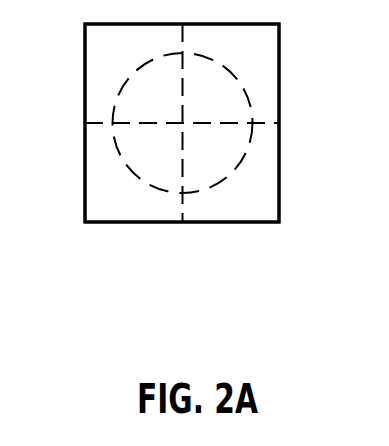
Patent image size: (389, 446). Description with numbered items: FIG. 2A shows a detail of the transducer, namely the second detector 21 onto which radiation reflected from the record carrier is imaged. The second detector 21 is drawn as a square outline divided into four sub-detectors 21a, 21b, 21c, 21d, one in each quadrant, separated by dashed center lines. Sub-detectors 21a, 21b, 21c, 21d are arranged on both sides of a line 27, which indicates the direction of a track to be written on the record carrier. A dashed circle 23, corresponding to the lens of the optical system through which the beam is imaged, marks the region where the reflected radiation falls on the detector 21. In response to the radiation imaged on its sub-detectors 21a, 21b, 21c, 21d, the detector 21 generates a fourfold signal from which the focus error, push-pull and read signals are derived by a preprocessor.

The second detector 21 is at (107, 266).
The first quadrant sub-element 21a is at (90, 66).
The second quadrant sub-element 21b is at (273, 66).
The third quadrant sub-element 21c is at (92, 192).
The fourth quadrant sub-element 21d is at (262, 191).
The lens 23 is at (247, 143).
The line 27 is at (95, 133).